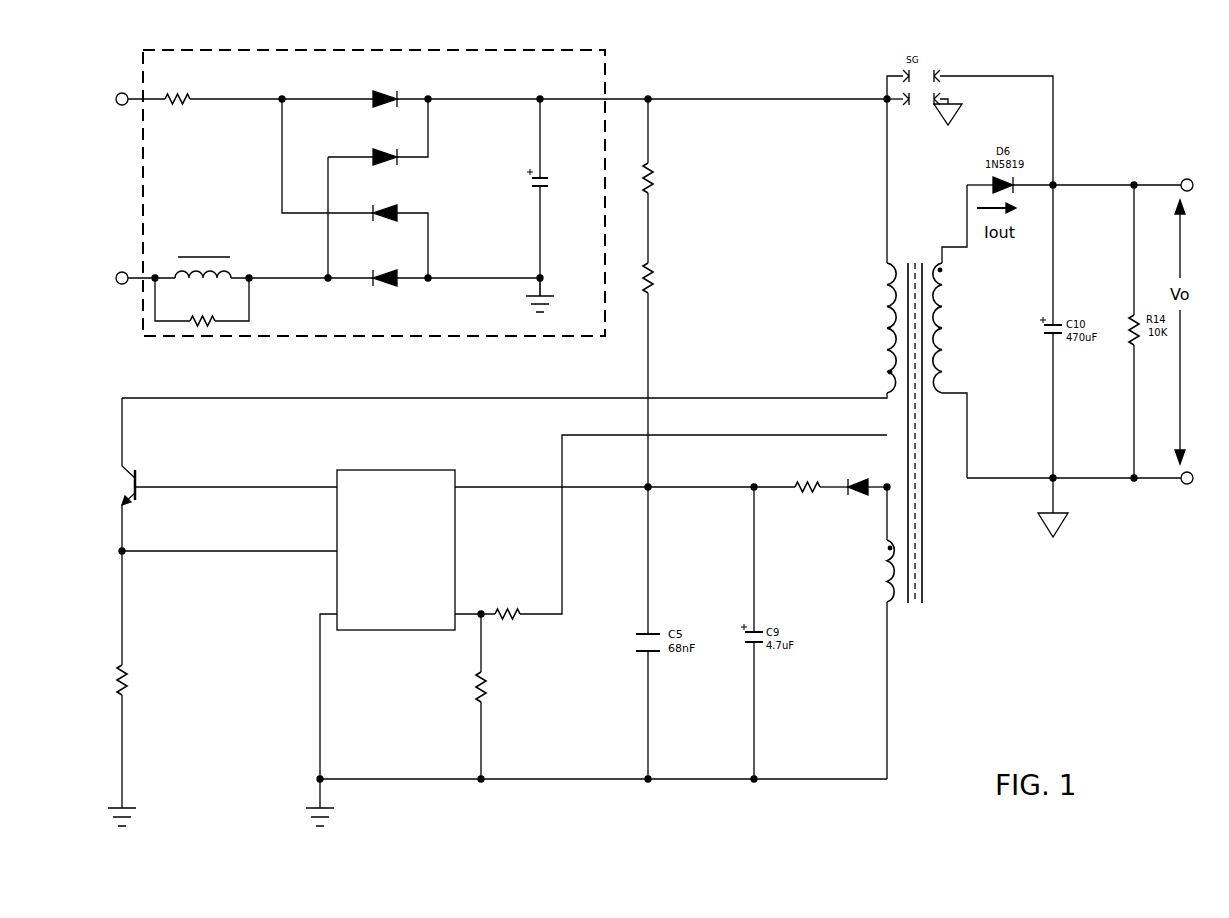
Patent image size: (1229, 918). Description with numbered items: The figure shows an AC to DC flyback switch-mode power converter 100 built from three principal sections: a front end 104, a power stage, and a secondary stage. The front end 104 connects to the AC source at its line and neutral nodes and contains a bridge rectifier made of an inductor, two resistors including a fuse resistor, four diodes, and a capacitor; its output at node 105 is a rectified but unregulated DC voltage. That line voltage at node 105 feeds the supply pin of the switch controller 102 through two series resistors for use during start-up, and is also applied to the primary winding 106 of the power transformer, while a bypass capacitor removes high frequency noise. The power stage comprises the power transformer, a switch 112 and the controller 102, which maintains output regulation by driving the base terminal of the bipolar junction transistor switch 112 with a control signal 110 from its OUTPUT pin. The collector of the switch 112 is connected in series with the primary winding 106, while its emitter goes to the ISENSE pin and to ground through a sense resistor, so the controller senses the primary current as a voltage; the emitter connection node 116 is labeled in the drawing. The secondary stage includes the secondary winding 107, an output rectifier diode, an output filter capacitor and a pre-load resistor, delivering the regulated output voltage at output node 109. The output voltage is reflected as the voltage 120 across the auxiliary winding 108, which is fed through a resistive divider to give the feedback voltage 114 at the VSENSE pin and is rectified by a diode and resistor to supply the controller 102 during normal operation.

The power converter 100 is at (993, 618).
The switch controller 102 is at (363, 470).
The front end 104 is at (607, 78).
The node 105 is at (657, 103).
The primary winding 106 is at (890, 275).
The secondary winding 107 is at (940, 293).
The auxiliary winding 108 is at (887, 567).
The output node 109 is at (1134, 185).
The control signal 110 is at (197, 487).
The switch 112 is at (137, 488).
The voltage at the VSENSE pin 114 is at (481, 614).
The current sense node 116 is at (122, 551).
The voltage across auxiliary winding 120 is at (887, 487).